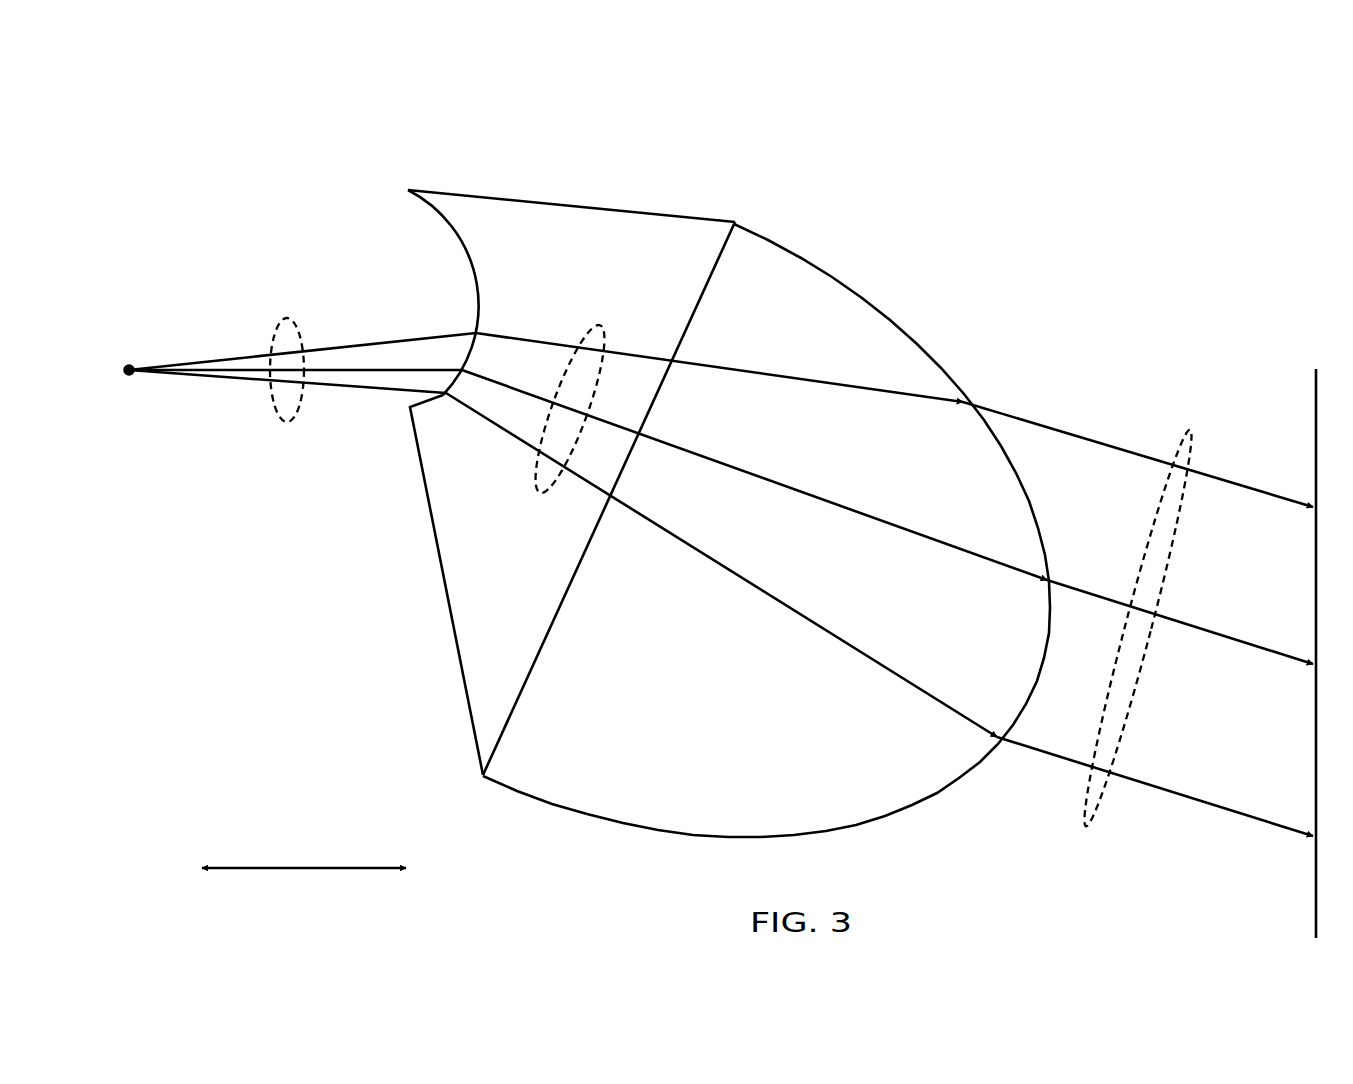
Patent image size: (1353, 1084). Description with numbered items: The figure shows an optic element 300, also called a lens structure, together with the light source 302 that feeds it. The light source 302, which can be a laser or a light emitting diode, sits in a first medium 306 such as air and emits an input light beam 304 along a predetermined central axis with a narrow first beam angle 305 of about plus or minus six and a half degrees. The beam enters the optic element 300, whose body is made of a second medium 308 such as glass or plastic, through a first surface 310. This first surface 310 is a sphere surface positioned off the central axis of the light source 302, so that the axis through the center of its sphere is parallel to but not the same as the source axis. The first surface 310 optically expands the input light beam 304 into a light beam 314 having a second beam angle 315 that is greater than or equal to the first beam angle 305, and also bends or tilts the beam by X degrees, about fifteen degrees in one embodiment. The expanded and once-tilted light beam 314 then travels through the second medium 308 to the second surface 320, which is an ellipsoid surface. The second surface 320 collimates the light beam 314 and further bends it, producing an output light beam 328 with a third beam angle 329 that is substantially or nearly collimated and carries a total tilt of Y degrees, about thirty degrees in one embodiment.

The optic element 300 is at (515, 623).
The light source 302 is at (134, 312).
The input light beam 304 is at (287, 422).
The first beam angle 305 is at (302, 454).
The first medium 306 is at (378, 730).
The second medium 308 is at (768, 814).
The first surface 310 is at (472, 263).
The light beam 314 is at (600, 325).
The second beam angle 315 is at (746, 425).
The second surface 320 is at (900, 332).
The output light beam 328 is at (1190, 430).
The third beam angle 329 is at (1139, 602).